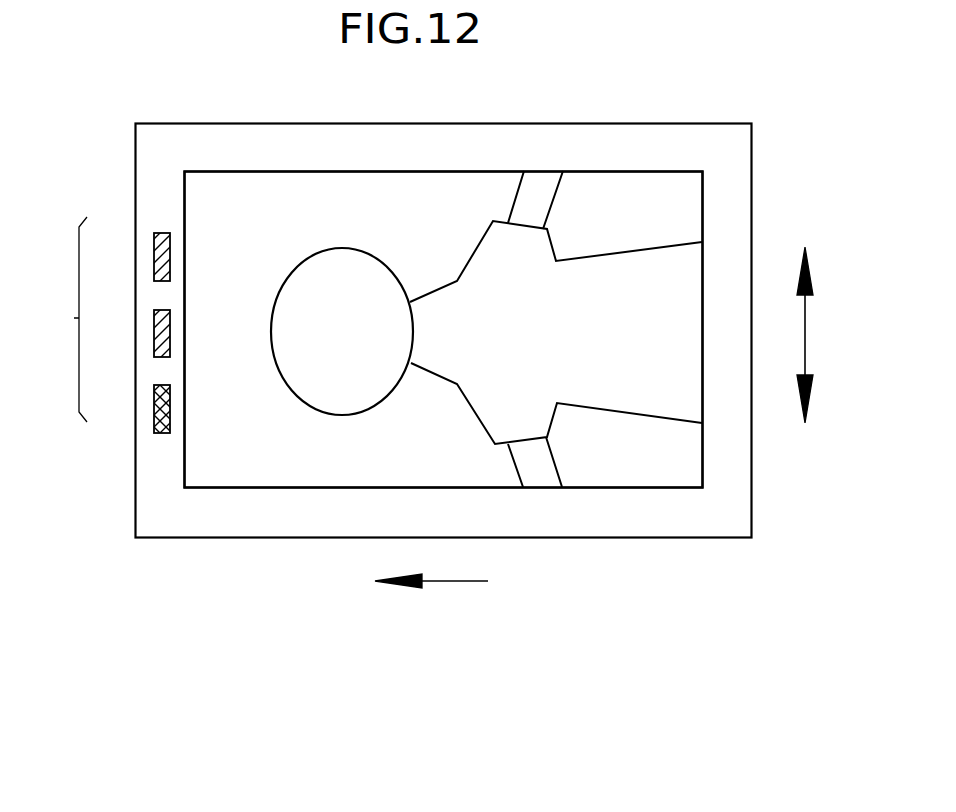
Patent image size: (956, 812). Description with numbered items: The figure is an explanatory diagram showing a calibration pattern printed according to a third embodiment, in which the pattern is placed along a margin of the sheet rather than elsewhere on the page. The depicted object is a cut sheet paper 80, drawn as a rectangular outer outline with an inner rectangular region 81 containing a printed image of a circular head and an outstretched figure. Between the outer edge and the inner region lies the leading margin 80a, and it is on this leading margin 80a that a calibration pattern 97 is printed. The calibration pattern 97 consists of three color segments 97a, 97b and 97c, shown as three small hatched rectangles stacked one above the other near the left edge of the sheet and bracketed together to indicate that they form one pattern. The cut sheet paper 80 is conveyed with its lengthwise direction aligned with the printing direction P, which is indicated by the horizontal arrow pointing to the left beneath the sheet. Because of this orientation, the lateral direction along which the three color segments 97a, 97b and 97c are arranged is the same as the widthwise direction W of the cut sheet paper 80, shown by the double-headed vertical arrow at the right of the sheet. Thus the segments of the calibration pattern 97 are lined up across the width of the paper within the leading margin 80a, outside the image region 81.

The cut sheet paper 80 is at (570, 120).
The leading margin 80a is at (157, 172).
The display region 81 is at (230, 467).
The calibration pattern 97 is at (112, 336).
The color segment 97a is at (154, 258).
The color segment 97b is at (154, 334).
The color segment 97c is at (154, 409).
The widthwise direction W is at (823, 335).
The printing direction P is at (463, 581).